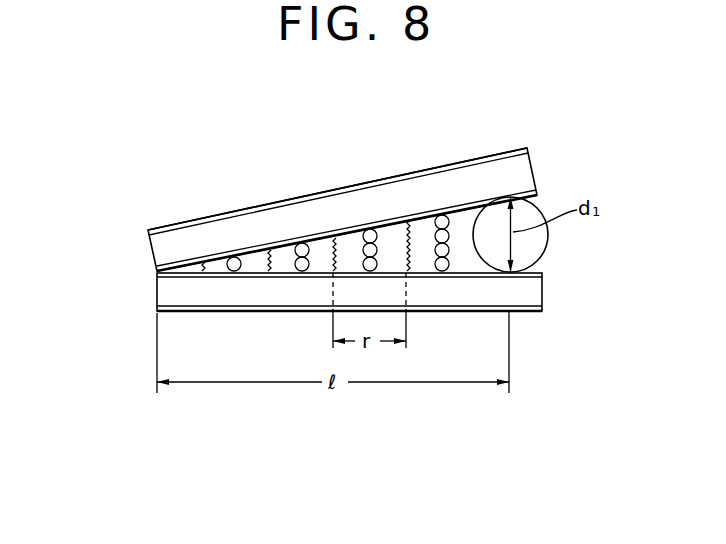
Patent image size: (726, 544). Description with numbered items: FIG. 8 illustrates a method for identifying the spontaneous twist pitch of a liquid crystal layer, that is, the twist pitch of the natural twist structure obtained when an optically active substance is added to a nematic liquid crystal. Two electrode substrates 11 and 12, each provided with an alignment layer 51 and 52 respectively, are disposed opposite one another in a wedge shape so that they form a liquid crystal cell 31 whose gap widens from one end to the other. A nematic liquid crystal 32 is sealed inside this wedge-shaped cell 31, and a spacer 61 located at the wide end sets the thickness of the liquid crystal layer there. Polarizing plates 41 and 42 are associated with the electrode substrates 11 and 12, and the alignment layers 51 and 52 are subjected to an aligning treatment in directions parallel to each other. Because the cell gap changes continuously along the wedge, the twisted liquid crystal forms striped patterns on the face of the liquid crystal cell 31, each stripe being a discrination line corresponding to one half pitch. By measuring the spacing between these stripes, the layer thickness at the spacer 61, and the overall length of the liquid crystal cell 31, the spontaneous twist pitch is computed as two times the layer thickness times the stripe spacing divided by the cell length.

The electrode substrate 11 is at (479, 150).
The electrode substrate 12 is at (525, 327).
The liquid crystal cell 31 is at (156, 209).
The nematic liquid crystal 32 is at (458, 222).
The polarizing plate 41 is at (213, 216).
The polarizing plate 42 is at (157, 308).
The alignment layer 51 is at (376, 222).
The alignment layer 52 is at (483, 279).
The spacer 61 is at (538, 240).